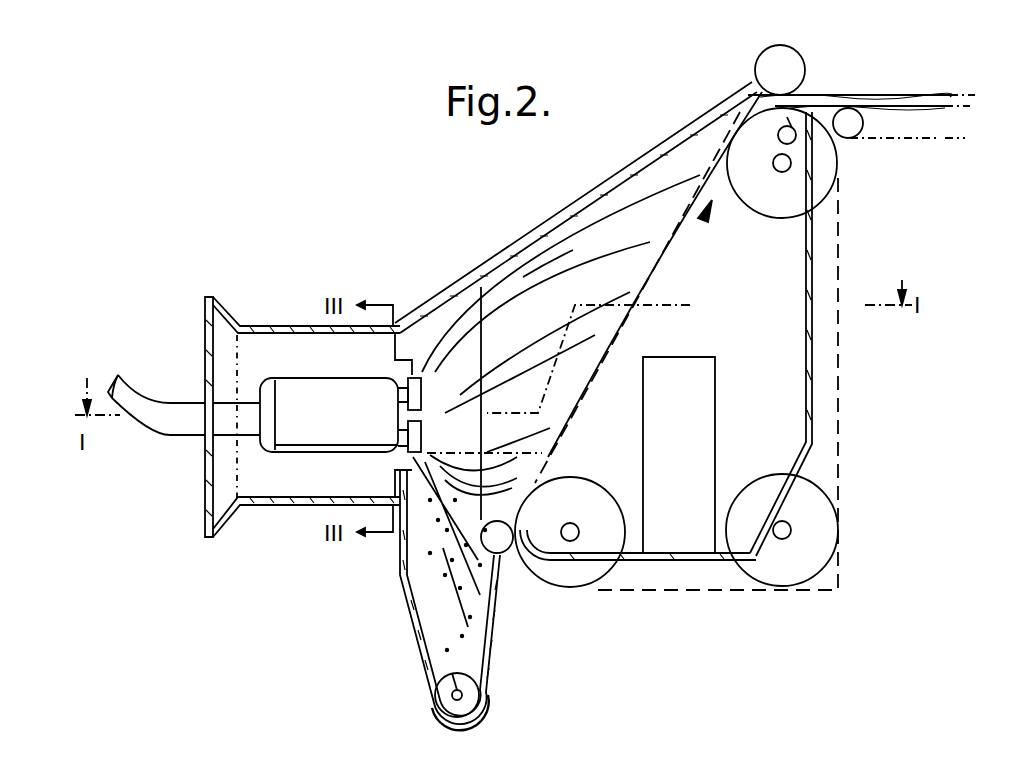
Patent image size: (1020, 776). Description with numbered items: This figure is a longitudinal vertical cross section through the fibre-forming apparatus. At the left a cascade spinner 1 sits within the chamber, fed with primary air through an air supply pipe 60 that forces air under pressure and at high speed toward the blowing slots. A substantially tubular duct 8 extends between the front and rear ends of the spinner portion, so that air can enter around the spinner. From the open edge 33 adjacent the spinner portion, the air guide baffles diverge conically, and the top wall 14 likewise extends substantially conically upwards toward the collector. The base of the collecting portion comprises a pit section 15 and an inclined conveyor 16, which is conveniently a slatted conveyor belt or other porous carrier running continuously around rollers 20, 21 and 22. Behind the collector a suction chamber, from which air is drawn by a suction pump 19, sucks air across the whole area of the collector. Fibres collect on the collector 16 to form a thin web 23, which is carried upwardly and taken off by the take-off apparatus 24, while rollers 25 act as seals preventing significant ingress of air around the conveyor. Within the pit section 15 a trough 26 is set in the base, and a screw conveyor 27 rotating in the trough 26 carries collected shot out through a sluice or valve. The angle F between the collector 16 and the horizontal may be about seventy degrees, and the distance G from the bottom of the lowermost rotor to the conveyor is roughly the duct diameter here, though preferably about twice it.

The cascade spinner 1 is at (336, 382).
The tubular duct 8 is at (283, 508).
The top wall 14 is at (557, 220).
The pit section 15 is at (483, 658).
The inclined conveyor 16 is at (656, 255).
The suction pump 19 is at (691, 455).
The roller 20 is at (583, 475).
The roller 21 is at (773, 217).
The roller 22 is at (820, 548).
The web 23 is at (928, 92).
The take-off apparatus 24 is at (925, 137).
The sealing rollers 25 is at (793, 65).
The trough 26 is at (480, 710).
The screw conveyor 27 is at (448, 705).
The open edge 33 is at (478, 300).
The air supply pipe 60 is at (136, 396).
The distance G is at (505, 450).
The angle F is at (648, 283).